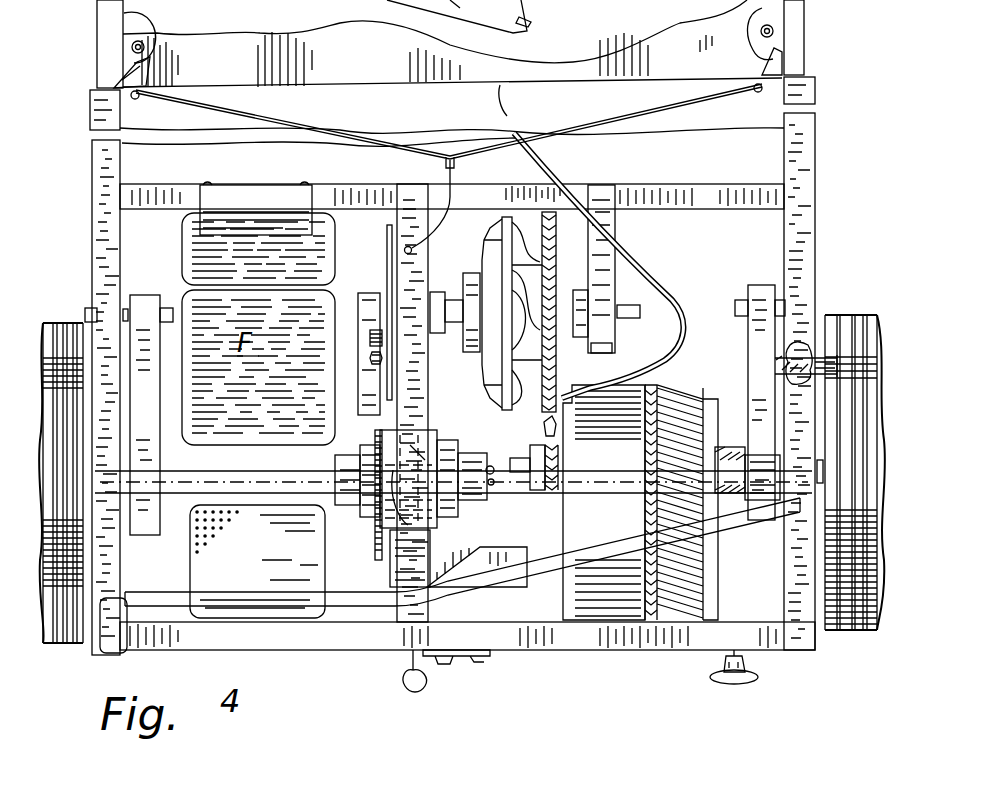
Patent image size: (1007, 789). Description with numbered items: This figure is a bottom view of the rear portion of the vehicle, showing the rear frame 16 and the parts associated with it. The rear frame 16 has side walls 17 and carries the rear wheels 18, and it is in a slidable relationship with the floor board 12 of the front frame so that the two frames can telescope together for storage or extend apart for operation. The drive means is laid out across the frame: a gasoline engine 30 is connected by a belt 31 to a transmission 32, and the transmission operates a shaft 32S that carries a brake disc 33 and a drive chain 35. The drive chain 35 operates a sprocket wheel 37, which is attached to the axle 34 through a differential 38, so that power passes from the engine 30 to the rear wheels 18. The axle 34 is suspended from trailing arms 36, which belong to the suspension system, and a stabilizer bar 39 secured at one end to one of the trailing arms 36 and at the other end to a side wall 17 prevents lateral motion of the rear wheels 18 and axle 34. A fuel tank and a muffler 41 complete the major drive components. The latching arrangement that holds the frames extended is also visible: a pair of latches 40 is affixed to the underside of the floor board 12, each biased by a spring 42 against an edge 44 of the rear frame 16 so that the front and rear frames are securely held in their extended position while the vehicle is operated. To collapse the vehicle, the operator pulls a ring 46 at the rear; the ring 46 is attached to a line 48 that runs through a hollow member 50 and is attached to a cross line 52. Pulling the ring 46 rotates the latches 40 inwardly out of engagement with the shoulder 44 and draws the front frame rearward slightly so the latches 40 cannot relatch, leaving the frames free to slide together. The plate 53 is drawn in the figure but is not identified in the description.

The floor board 12 is at (711, 63).
The rear frame 16 is at (815, 255).
The side walls 17 is at (117, 577).
The rear wheels 18 is at (66, 324).
The gasoline engine 30 is at (613, 449).
The belt 31 is at (553, 379).
The transmission 32 is at (527, 290).
The shaft 32S is at (446, 294).
The brake disc 33 is at (387, 238).
The axle 34 is at (242, 488).
The drive chain 35 is at (373, 355).
The trailing arms 36 is at (147, 430).
The sprocket wheel 37 is at (332, 481).
The differential 38 is at (408, 492).
The stabilizer bar 39 is at (508, 575).
The latches 40 is at (127, 65).
The muffler 41 is at (275, 572).
The spring 42 is at (148, 28).
The edge 44 is at (95, 83).
The ring 46 is at (433, 688).
The line 48 is at (439, 209).
The hollow member 50 is at (418, 388).
The cross line 52 is at (320, 148).
The plate 53 is at (358, 280).